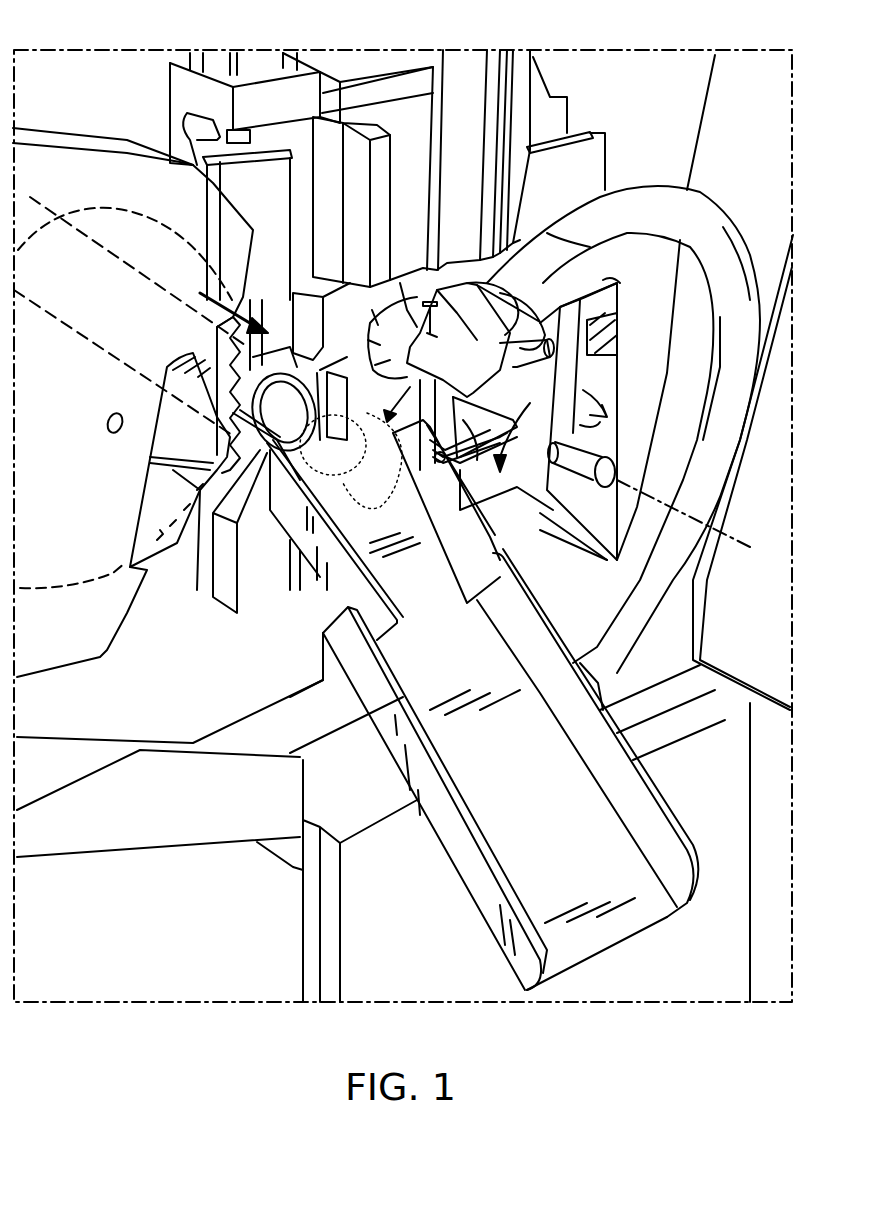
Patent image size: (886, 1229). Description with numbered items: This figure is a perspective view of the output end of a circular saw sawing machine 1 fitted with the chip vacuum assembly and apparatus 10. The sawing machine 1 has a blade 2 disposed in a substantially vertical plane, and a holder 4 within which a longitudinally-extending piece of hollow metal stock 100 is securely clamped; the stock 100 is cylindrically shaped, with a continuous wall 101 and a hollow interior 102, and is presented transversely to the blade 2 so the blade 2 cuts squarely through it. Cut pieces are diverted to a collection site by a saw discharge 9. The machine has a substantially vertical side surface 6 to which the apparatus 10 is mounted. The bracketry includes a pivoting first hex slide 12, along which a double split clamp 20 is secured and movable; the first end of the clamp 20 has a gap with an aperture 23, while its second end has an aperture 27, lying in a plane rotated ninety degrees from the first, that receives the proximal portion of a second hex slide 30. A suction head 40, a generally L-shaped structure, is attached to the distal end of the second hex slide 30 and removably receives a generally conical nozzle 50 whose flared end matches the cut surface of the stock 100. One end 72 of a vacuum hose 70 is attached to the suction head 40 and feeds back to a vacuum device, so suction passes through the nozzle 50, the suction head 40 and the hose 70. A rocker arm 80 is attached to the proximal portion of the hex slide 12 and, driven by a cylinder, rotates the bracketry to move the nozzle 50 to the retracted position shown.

The circular saw sawing machine 1 is at (407, 127).
The chip vacuum assembly and apparatus 10 is at (612, 127).
The vacuum hose 70 is at (690, 210).
The end of vacuum hose 72 is at (557, 233).
The suction head 40 is at (457, 290).
The second hex slide 30 is at (530, 302).
The side surface 6 is at (603, 280).
The aperture 27 is at (610, 320).
The double split clamp 20 is at (565, 380).
The pivoting first hex slide 12 is at (617, 435).
The nozzle 50 is at (297, 310).
The hollow metal stock 100 is at (233, 323).
The continuous wall 101 is at (210, 360).
The blade 2 is at (193, 362).
The hollow interior 102 is at (235, 386).
The holder 4 is at (240, 460).
The rocker arm 80 is at (463, 464).
The aperture 23 is at (545, 440).
The saw discharge 9 is at (403, 603).